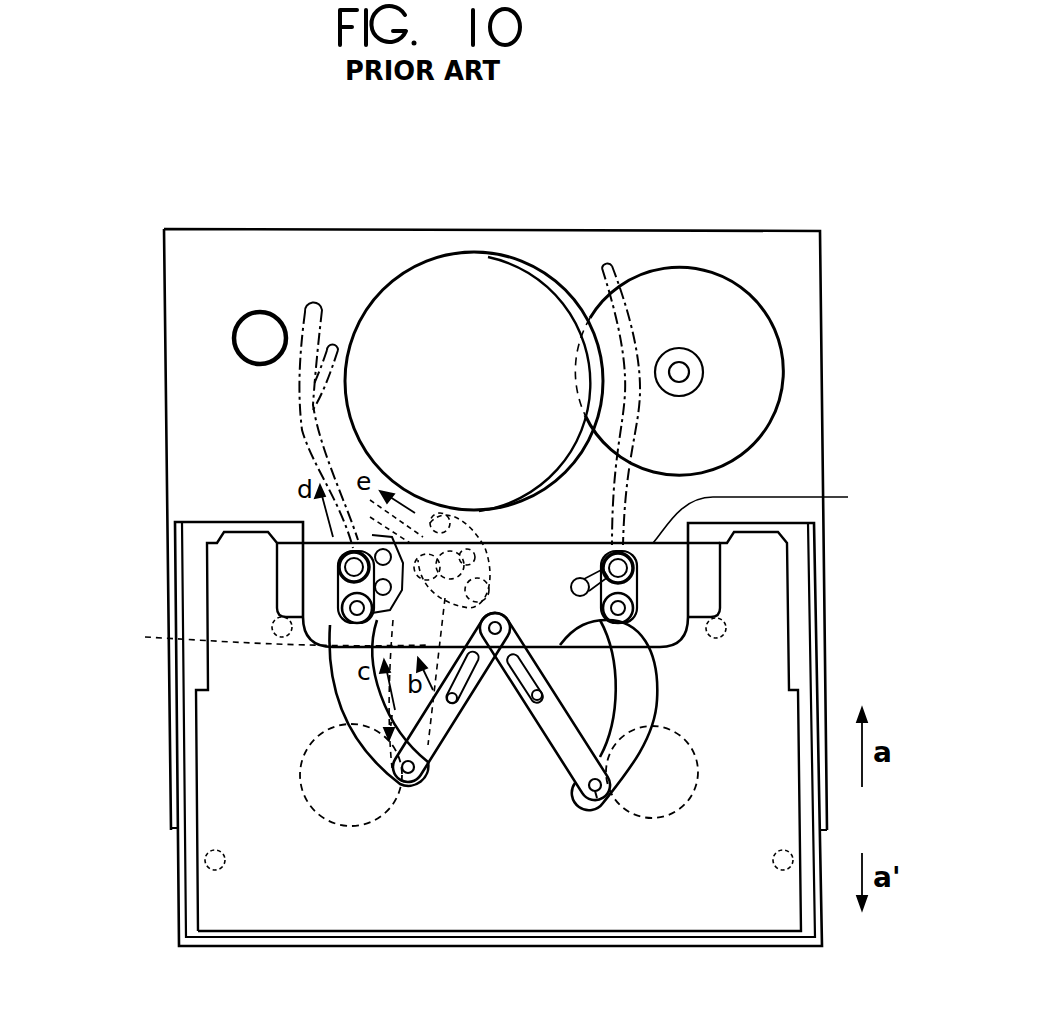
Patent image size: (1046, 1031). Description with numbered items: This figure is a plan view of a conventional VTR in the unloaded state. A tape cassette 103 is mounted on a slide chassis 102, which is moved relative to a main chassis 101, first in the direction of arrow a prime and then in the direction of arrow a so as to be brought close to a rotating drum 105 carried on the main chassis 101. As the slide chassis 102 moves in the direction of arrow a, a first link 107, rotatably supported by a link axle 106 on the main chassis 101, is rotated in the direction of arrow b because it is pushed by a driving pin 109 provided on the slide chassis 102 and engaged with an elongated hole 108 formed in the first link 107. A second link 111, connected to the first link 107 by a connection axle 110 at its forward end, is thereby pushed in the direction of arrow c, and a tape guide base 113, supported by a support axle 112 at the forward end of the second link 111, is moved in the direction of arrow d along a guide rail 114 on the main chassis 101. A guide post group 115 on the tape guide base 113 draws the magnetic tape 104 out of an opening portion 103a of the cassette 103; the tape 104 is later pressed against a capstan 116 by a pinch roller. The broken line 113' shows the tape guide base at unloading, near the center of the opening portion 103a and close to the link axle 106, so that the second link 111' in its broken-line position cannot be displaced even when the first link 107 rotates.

The main chassis 101 is at (802, 292).
The slide chassis 102 is at (800, 570).
The tape cassette 103 is at (708, 912).
The opening portion 103a is at (640, 677).
The magnetic tape 104 is at (779, 514).
The rotating drum 105 is at (471, 272).
The link axle 106 is at (500, 620).
The first link 107 is at (450, 742).
The elongated hole 108 is at (482, 690).
The driving pin 109 is at (458, 703).
The connection axle 110 is at (412, 773).
The second link 111 is at (260, 703).
The second link in broken-line position 111' is at (265, 683).
The support axle 112 is at (350, 596).
The tape guide base 113 is at (221, 560).
The tape guide base in unloading position 113' is at (430, 526).
The guide rail 114 is at (300, 408).
The guide post group 115 is at (340, 556).
The capstan 116 is at (680, 366).